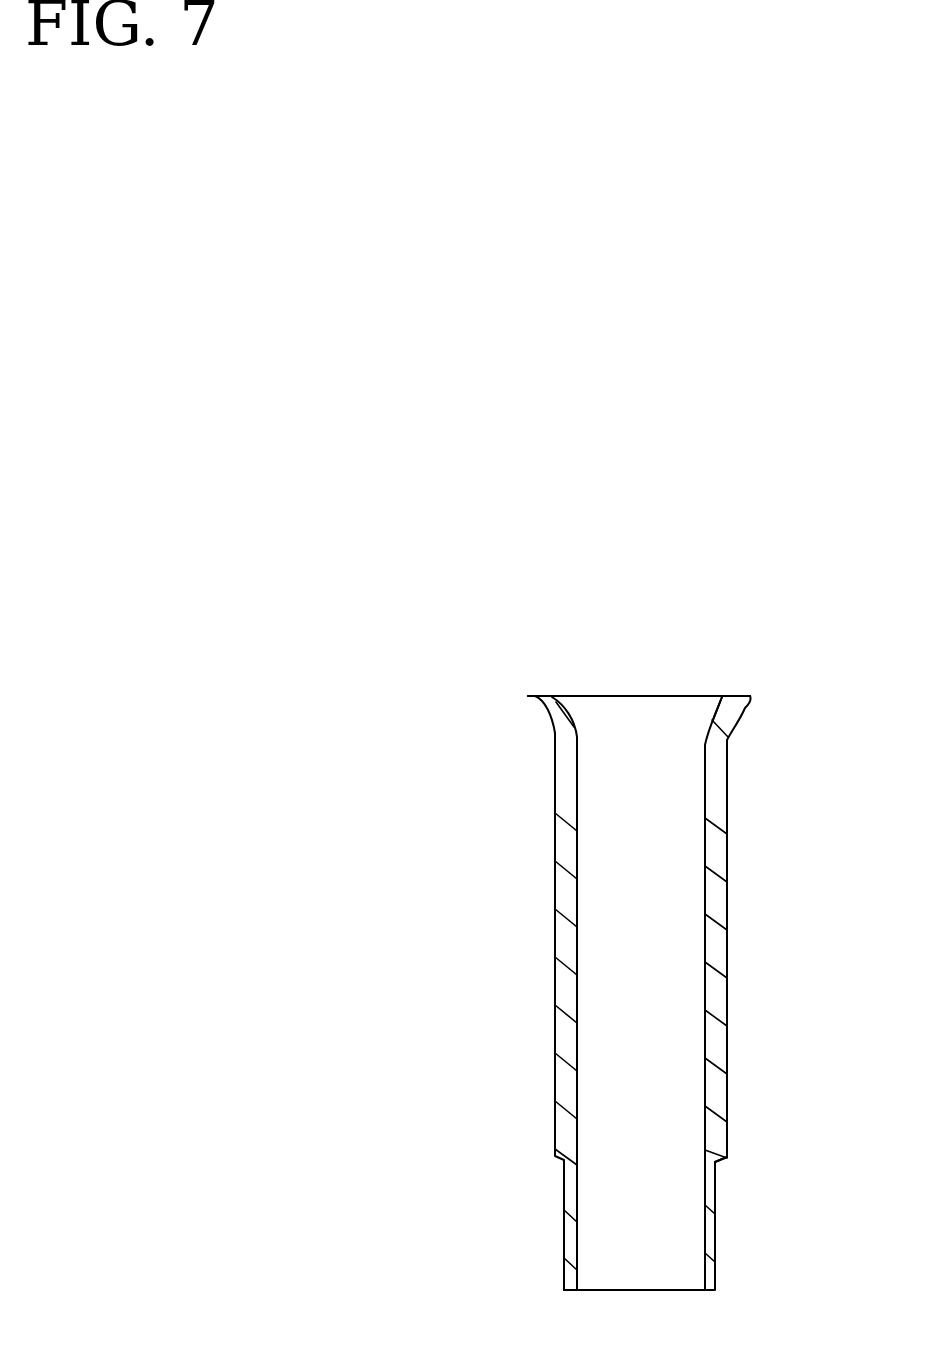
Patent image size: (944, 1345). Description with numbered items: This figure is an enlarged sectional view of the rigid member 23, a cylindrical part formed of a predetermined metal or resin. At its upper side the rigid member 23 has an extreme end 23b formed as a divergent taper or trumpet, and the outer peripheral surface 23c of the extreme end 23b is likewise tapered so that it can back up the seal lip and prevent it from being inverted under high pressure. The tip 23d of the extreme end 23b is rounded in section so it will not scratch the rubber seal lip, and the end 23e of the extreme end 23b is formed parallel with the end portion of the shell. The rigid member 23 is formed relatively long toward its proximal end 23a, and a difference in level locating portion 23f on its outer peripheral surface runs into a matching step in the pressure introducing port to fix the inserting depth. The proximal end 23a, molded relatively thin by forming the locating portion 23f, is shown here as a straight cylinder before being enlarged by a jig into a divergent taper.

The rigid member 23 is at (545, 948).
The proximal end 23a is at (715, 1235).
The extreme end 23b is at (736, 709).
The outer peripheral surface 23c is at (736, 722).
The tip 23d is at (528, 696).
The end 23e is at (547, 694).
The difference in level locating portion 23f is at (716, 1161).